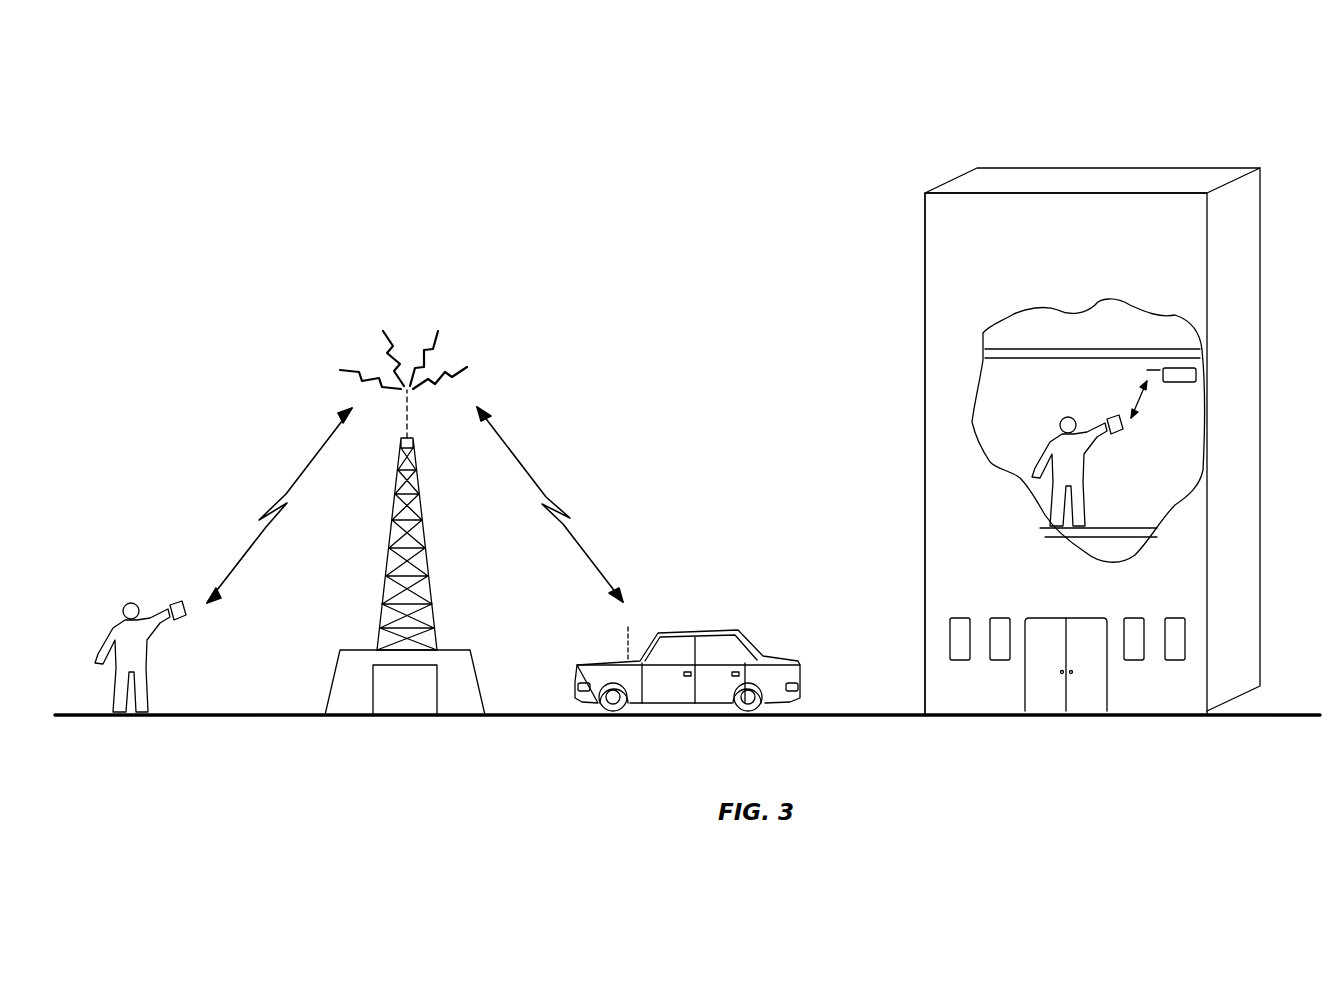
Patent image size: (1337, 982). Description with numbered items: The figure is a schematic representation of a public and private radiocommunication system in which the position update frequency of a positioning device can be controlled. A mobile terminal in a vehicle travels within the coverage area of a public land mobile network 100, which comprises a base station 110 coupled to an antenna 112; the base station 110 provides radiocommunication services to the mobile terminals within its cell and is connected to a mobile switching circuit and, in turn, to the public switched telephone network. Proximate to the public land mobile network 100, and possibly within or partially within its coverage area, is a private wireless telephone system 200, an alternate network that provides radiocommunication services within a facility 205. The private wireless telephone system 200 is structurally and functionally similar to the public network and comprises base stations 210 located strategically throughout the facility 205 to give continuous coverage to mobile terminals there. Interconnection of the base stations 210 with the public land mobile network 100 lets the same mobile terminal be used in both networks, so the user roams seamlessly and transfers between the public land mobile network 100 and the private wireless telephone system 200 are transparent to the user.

The public land mobile network 100 is at (536, 312).
The base station 110 is at (440, 682).
The antenna 112 is at (407, 420).
The private wireless telephone system 200 is at (950, 130).
The facility 205 is at (925, 265).
The base stations 210 is at (1200, 362).